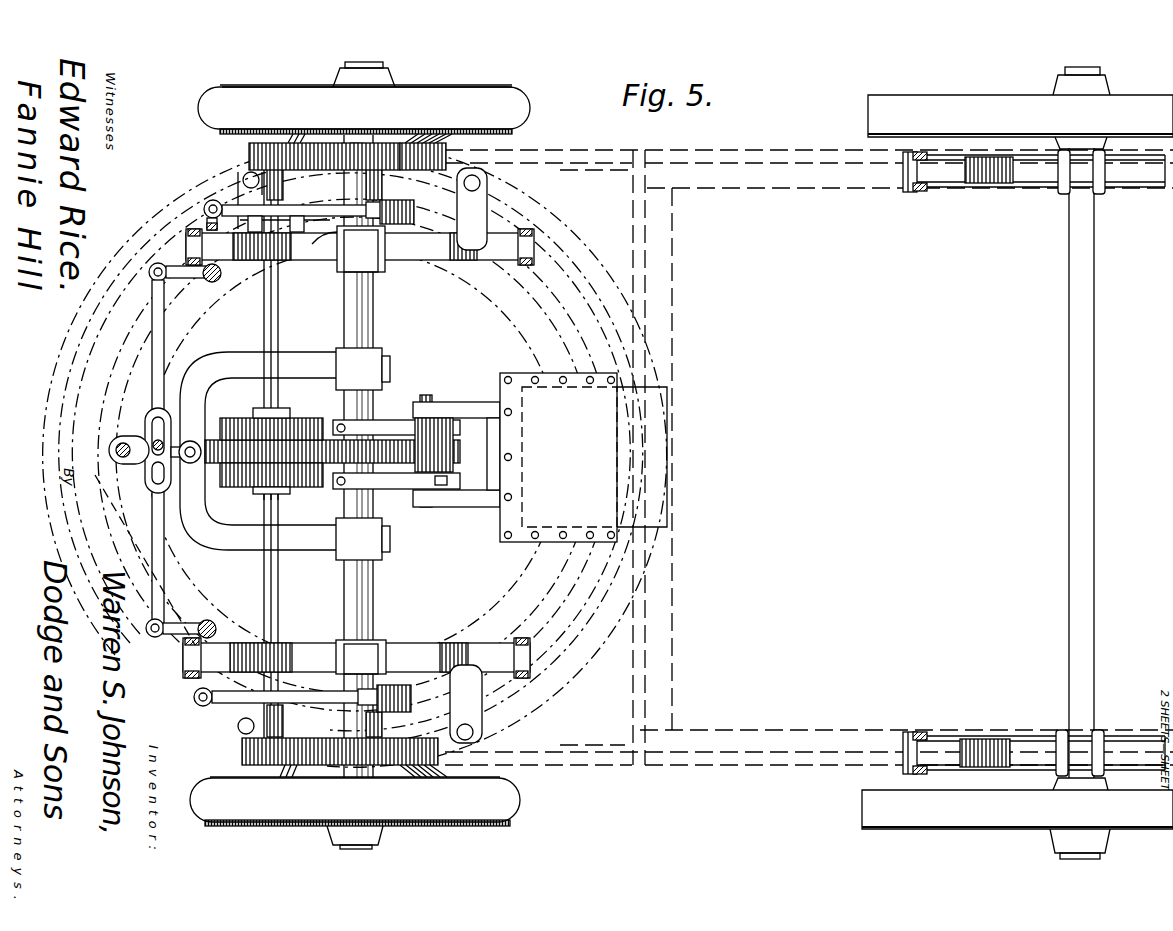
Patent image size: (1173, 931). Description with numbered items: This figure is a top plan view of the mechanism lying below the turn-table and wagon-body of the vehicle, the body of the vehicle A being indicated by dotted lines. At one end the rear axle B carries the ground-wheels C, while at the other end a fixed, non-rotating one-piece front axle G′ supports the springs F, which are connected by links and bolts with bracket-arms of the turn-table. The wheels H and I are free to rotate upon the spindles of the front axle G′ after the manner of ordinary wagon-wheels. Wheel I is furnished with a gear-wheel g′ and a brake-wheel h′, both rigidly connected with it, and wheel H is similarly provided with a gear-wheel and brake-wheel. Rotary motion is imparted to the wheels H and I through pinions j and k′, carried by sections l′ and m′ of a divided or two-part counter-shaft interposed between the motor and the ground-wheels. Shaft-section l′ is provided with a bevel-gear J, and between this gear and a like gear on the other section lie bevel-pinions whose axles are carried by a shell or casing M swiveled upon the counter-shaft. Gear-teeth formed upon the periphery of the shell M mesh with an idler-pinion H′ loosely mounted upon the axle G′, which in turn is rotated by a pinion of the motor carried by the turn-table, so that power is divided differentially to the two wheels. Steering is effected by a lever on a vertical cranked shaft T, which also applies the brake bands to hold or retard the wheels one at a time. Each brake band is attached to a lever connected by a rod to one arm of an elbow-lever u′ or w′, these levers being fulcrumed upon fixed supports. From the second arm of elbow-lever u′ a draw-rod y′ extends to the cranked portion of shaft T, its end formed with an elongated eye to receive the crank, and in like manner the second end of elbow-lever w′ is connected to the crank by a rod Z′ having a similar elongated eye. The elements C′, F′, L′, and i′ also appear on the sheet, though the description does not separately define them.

The body of the vehicle A is at (809, 445).
The rear axle B is at (1067, 463).
The ground-wheels C is at (1017, 463).
The clutch C′ is at (447, 157).
The springs F is at (445, 643).
The pinion F′ is at (400, 204).
The front axle G′ is at (374, 467).
The wheel H is at (530, 108).
The idler-pinion H′ is at (372, 440).
The wheel I is at (515, 805).
The bevel-gear J is at (569, 457).
The coupling L′ is at (450, 415).
The shell or casing M is at (300, 430).
The cranked shaft T is at (110, 455).
The rod Z′ is at (165, 563).
The gear-wheel g′ is at (352, 768).
The brake-wheel h′ is at (352, 705).
The rod i′ is at (348, 207).
The pinion j is at (248, 156).
The pinion k′ is at (240, 757).
The shaft-section l′ is at (264, 325).
The shaft-section m′ is at (264, 590).
The elbow-lever u′ is at (204, 208).
The elbow-lever w′ is at (185, 626).
The draw-rod y′ is at (165, 320).